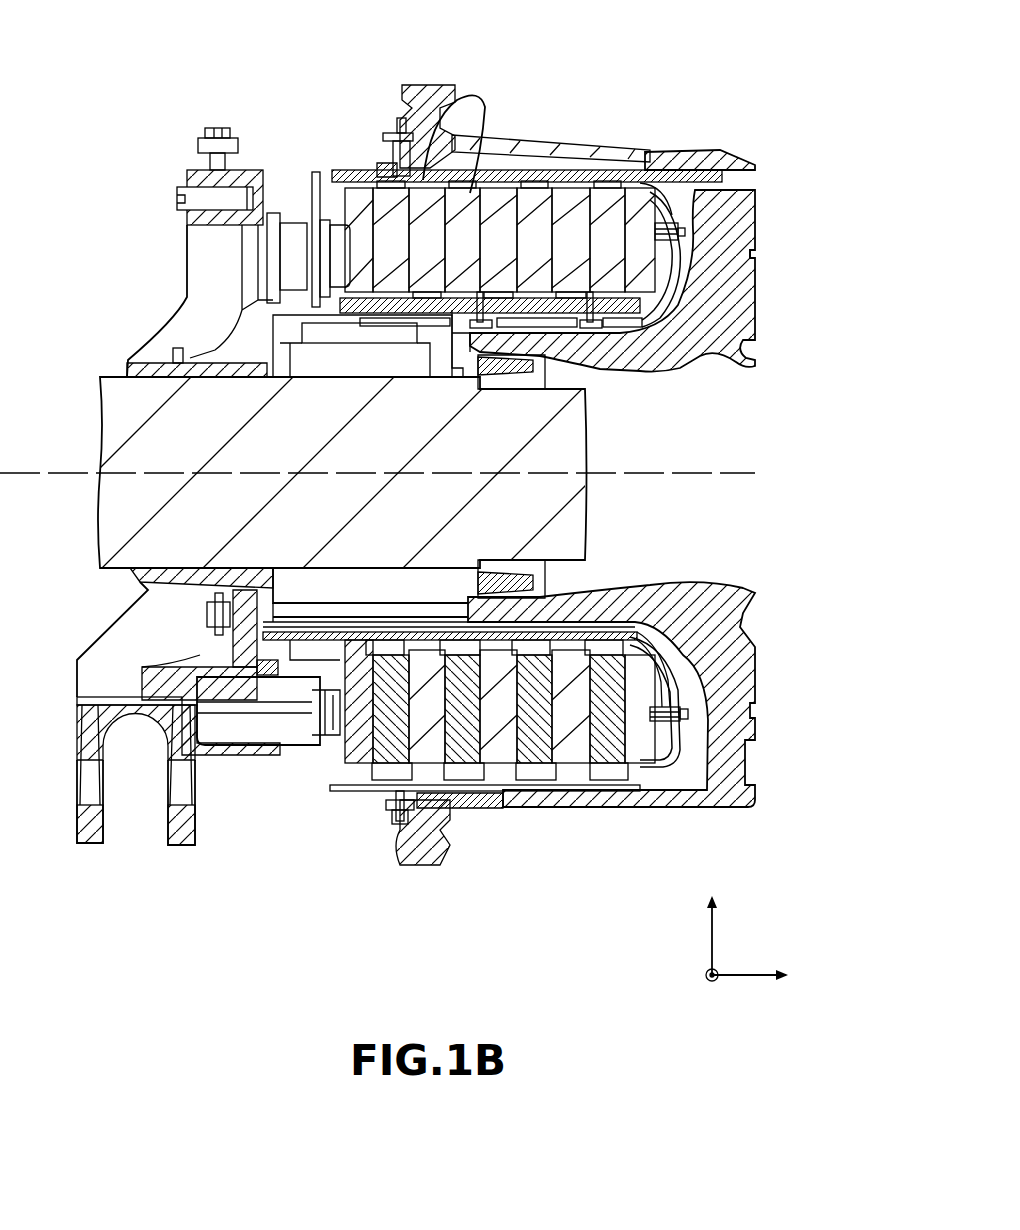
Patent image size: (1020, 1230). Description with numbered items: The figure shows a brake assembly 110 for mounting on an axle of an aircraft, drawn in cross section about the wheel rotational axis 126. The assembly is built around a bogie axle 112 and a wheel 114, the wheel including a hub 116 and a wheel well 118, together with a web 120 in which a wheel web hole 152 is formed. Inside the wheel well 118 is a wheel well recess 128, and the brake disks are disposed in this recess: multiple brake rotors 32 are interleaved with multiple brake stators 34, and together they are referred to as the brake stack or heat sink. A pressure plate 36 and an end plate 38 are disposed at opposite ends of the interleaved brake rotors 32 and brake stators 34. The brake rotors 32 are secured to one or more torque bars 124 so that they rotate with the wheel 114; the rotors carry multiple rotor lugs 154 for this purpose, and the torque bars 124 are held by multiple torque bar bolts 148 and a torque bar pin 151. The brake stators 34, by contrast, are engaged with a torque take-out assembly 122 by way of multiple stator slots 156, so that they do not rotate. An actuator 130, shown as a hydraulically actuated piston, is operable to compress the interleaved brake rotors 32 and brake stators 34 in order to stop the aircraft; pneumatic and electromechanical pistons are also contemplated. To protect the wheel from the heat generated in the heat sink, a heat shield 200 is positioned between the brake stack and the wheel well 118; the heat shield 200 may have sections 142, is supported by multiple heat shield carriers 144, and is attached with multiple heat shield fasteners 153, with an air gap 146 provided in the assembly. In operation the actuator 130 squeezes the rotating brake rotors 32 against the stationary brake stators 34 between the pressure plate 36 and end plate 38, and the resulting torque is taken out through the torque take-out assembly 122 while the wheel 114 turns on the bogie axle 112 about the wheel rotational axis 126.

The brake assembly 110 is at (760, 92).
The bogie axle 112 is at (92, 423).
The wheel 114 is at (610, 126).
The hub 116 is at (647, 271).
The wheel well 118 is at (740, 160).
The web 120 is at (733, 678).
The torque take-out assembly 122 is at (385, 325).
The torque bars 124 is at (345, 168).
The wheel rotational axis 126 is at (652, 468).
The wheel well recess 128 is at (697, 237).
The actuator 130 is at (248, 778).
The heat shield sections 142 is at (535, 150).
The heat shield carriers 144 is at (395, 830).
The air gap 146 is at (430, 160).
The torque bar bolts 148 is at (385, 170).
The torque bar pin 151 is at (688, 192).
The wheel web hole 152 is at (750, 213).
The heat shield fasteners 153 is at (398, 822).
The rotor lugs 154 is at (455, 180).
The stator slots 156 is at (440, 320).
The heat shield 200 is at (355, 822).
The brake rotors 32 is at (381, 256).
The brake stators 34 is at (417, 256).
The pressure plate 36 is at (349, 256).
The end plate 38 is at (630, 256).